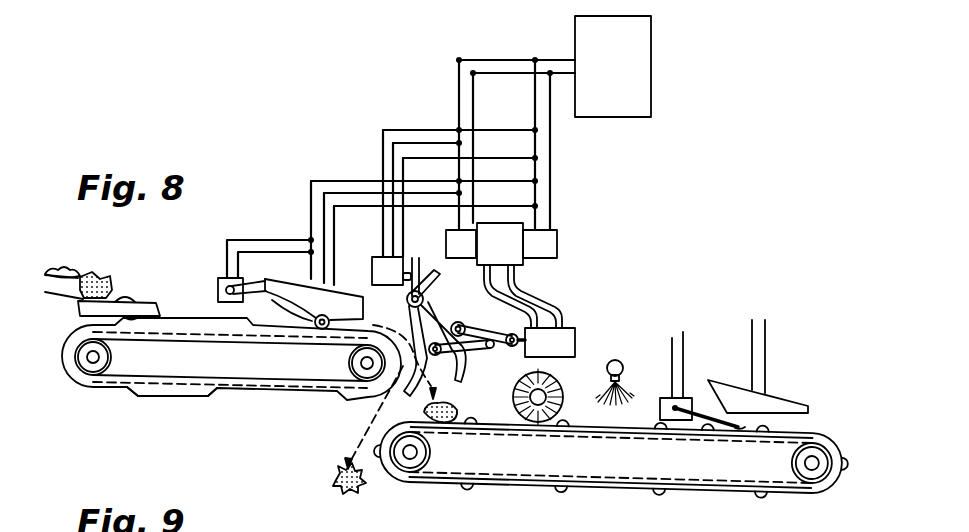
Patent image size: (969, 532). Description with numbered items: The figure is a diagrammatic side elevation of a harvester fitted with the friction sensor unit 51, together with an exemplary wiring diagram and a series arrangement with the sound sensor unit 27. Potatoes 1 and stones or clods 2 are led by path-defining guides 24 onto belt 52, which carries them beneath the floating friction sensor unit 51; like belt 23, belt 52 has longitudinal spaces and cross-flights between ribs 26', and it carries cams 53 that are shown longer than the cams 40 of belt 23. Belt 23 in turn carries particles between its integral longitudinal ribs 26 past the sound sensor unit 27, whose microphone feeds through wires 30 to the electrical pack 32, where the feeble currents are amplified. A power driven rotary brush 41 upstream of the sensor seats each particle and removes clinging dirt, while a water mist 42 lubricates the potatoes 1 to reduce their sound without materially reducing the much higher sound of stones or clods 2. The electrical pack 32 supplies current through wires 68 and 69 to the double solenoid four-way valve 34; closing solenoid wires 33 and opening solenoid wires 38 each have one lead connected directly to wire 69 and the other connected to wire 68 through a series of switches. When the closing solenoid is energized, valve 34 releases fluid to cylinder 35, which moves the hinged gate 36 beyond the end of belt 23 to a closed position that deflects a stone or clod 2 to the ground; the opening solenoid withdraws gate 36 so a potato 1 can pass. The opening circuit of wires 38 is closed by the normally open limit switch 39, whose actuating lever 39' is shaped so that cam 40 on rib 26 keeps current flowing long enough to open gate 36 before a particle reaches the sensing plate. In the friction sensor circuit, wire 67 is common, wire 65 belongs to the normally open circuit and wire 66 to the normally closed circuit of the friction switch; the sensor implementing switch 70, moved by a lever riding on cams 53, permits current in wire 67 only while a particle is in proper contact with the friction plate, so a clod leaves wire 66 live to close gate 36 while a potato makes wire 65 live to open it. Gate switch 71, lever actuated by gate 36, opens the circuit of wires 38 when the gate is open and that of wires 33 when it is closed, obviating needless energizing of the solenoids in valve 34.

The potatoes 1 is at (74, 266).
The stone or clod 2 is at (100, 275).
The belt 23 is at (527, 480).
The path-defining guides 24 is at (161, 308).
The longitudinal ribs 26 is at (610, 474).
The ribs 26' is at (231, 370).
The sensor unit 27 is at (777, 395).
The wires 30 is at (754, 345).
The electrical pack 32 is at (651, 78).
The closing solenoid circuit wires 33 is at (458, 228).
The double solenoid four-way valve 34 is at (523, 266).
The cylinder 35 is at (578, 341).
The hinged gate 36 is at (439, 316).
The opening solenoid wires 38 is at (533, 226).
The limit switch 39 is at (689, 409).
The actuating lever 39' is at (710, 438).
The cam 40 is at (478, 417).
The rotary brush 41 is at (561, 386).
The mist 42 is at (622, 398).
The friction sensor unit 51 is at (363, 306).
The belt 52 is at (242, 379).
The cams 53 is at (200, 400).
The wire 65 is at (335, 248).
The wire 66 is at (352, 186).
The wire 67 is at (311, 232).
The wire 68 is at (572, 60).
The wire 69 is at (572, 76).
The sensor implementing switch 70 is at (218, 286).
The gate switch 71 is at (372, 273).